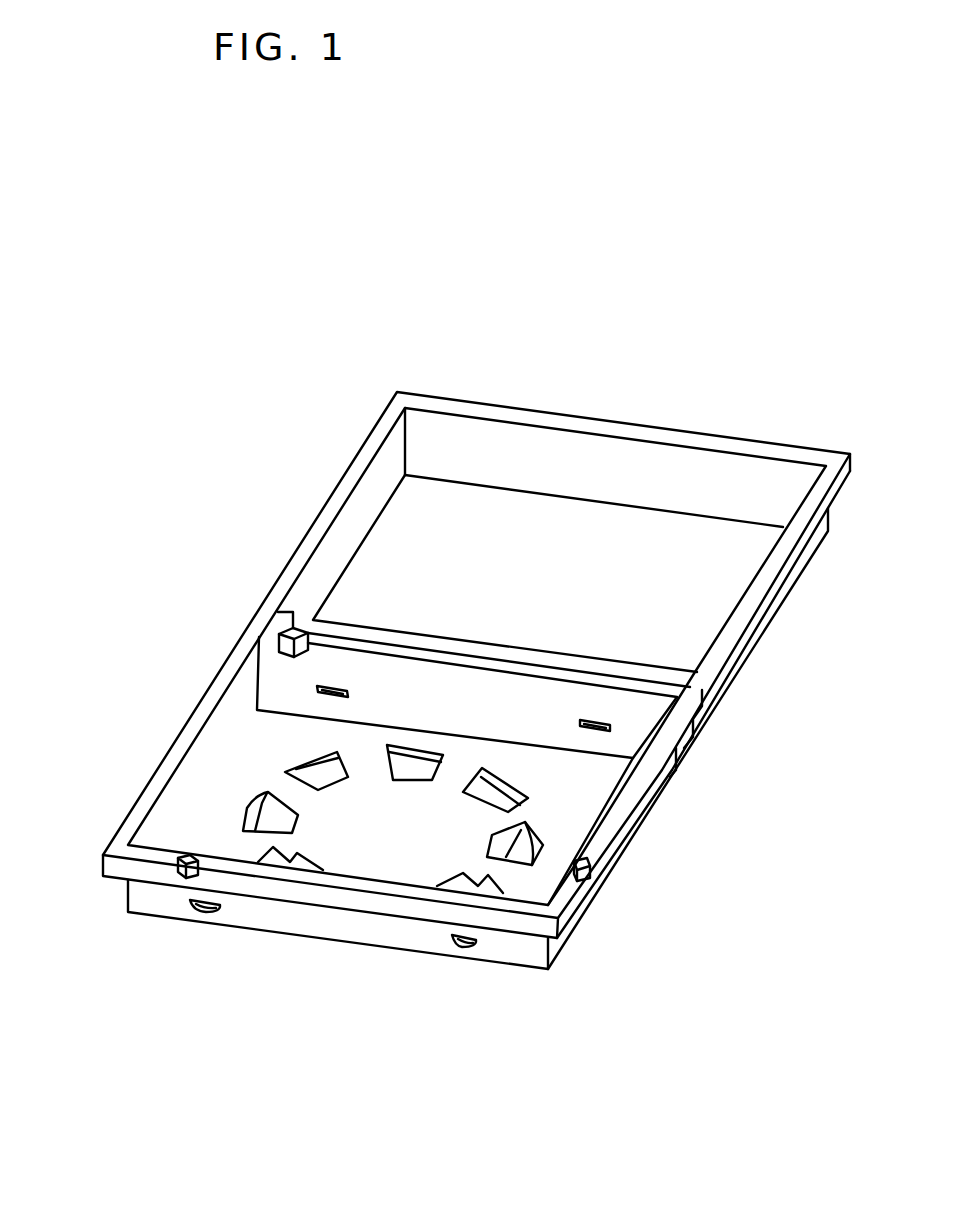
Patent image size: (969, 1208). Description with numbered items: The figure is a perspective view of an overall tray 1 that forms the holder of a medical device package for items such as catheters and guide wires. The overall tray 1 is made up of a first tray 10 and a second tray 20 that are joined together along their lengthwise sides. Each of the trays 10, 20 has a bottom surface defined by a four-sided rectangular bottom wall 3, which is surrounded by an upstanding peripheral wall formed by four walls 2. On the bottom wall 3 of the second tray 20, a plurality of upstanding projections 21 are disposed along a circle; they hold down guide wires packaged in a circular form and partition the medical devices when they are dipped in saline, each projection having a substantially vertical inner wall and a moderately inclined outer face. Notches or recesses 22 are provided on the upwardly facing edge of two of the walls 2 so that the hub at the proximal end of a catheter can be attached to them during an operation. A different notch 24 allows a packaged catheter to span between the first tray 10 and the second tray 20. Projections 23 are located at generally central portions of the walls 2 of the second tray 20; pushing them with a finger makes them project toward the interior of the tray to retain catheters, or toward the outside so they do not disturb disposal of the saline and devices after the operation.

The overall tray 1 is at (193, 539).
The walls 2 is at (703, 480).
The bottom wall 3 is at (657, 607).
The first tray 10 is at (355, 448).
The second tray 20 is at (160, 785).
The projections 21 is at (533, 823).
The recesses 22 is at (590, 870).
The projections 23 is at (457, 947).
The notch 24 is at (303, 632).